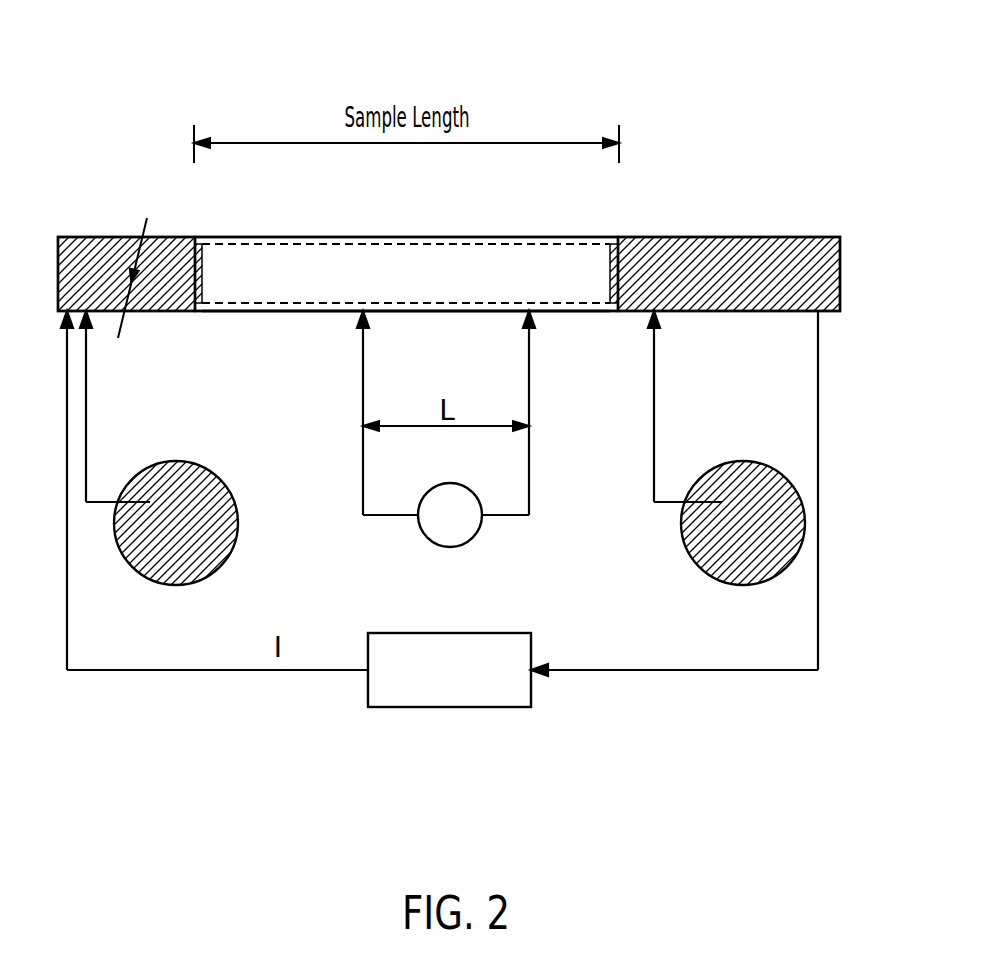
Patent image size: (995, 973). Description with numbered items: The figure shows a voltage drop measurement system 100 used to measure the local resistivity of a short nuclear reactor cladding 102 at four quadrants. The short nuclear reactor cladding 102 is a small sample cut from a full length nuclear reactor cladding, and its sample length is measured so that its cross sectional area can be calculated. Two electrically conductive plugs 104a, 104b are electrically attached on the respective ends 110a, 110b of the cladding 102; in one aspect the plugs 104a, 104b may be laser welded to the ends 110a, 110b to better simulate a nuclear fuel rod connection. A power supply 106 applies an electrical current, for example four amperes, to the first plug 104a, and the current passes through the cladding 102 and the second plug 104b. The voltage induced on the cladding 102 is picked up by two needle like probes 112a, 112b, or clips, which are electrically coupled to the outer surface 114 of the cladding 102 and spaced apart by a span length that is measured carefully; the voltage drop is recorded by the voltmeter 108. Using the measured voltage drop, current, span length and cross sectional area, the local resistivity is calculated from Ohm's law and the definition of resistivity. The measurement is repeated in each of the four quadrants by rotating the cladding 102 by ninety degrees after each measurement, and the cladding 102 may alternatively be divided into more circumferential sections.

The voltage drop measurement system 100 is at (729, 87).
The short nuclear reactor cladding 102 is at (415, 237).
The first electrically conductive plug 104a is at (128, 244).
The second electrically conductive plug 104b is at (722, 246).
The power supply 106 is at (450, 707).
The voltmeter 108 is at (448, 547).
The first end of the cladding 110a is at (197, 288).
The second end of the cladding 110b is at (611, 288).
The first needle like probe 112a is at (363, 412).
The second needle like probe 112b is at (529, 412).
The outer surface of the cladding 114 is at (440, 313).